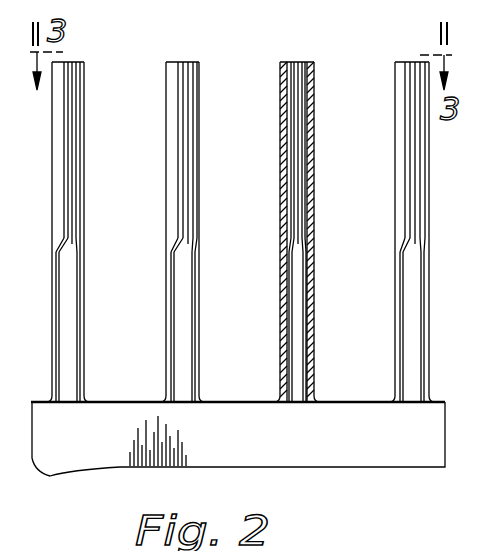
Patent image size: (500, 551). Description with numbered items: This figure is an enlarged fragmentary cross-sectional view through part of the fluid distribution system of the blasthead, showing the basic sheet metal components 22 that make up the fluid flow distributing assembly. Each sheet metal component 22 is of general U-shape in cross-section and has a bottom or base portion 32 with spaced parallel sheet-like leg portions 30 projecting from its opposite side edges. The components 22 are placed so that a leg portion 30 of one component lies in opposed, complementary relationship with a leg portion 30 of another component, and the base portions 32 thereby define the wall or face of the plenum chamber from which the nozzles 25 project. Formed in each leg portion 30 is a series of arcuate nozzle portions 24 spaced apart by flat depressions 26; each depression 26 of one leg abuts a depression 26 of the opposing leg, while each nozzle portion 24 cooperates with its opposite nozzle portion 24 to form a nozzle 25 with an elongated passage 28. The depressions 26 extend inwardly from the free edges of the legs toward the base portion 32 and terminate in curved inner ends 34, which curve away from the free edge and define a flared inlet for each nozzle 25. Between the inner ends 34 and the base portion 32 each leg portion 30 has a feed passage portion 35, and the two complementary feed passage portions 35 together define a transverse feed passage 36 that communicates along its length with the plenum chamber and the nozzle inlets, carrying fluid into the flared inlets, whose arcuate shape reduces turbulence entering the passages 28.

The sheet metal component 22 is at (130, 412).
The nozzle portion 24 is at (166, 155).
The nozzle 25 is at (280, 70).
The flat depression 26 is at (70, 66).
The elongated passage 28 is at (302, 60).
The leg portion 30 is at (83, 384).
The base portion 32 is at (158, 406).
The inner end 34 is at (165, 245).
The feed passage portion 35 is at (200, 312).
The transverse feed passage 36 is at (67, 310).